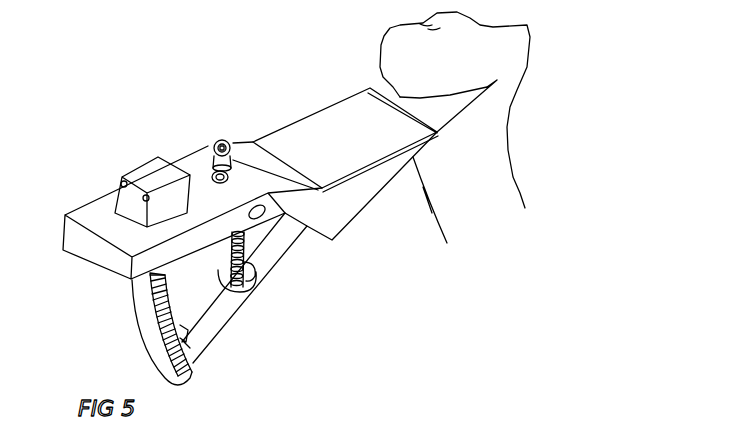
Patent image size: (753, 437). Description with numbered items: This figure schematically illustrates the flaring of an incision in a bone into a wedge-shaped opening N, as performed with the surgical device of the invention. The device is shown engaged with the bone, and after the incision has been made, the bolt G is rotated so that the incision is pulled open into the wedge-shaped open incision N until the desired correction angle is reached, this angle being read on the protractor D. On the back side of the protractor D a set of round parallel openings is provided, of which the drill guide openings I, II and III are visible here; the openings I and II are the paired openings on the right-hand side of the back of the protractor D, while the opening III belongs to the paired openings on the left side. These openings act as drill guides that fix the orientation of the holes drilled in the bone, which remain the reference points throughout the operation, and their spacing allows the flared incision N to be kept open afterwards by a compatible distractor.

The drill guide opening I is at (139, 189).
The drill guide opening II is at (150, 284).
The drill guide opening III is at (122, 180).
The wedge-shaped opening N is at (458, 103).
The bolt G is at (244, 248).
The protractor D is at (170, 315).